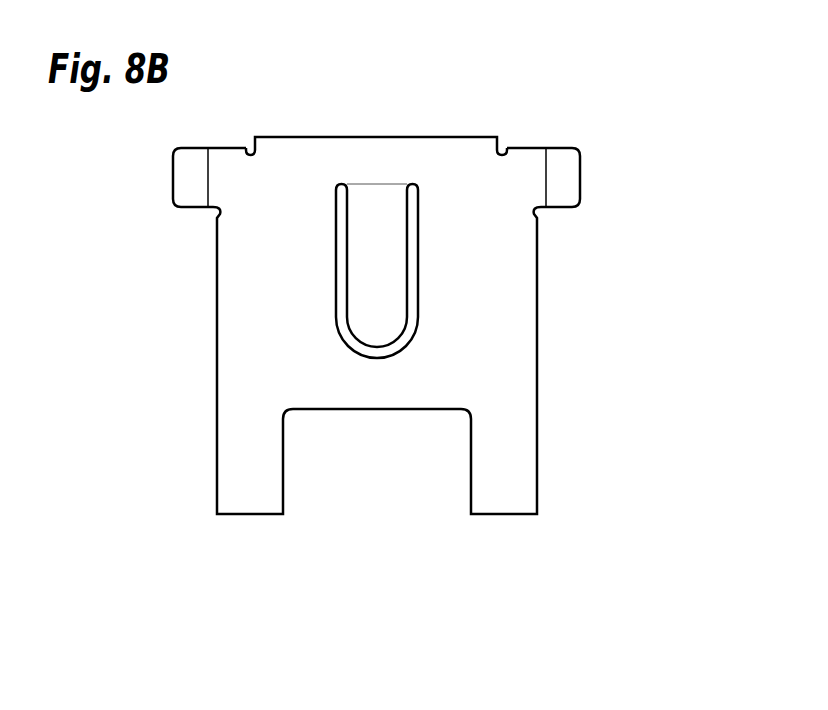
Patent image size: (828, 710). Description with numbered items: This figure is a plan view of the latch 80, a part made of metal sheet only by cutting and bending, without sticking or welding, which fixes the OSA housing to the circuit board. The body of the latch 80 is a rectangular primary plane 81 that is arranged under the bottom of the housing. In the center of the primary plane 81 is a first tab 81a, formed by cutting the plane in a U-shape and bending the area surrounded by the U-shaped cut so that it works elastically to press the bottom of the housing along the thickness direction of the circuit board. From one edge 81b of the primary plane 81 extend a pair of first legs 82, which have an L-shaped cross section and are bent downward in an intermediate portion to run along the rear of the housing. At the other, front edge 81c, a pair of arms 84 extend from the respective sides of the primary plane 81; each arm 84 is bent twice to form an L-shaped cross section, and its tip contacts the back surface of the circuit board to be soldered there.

The latch 80 is at (657, 72).
The primary plane 81 is at (456, 147).
The first tab 81a is at (370, 300).
The edge 81b is at (376, 410).
The front edge 81c is at (378, 137).
The first legs 82 is at (246, 493).
The arms 84 is at (173, 172).